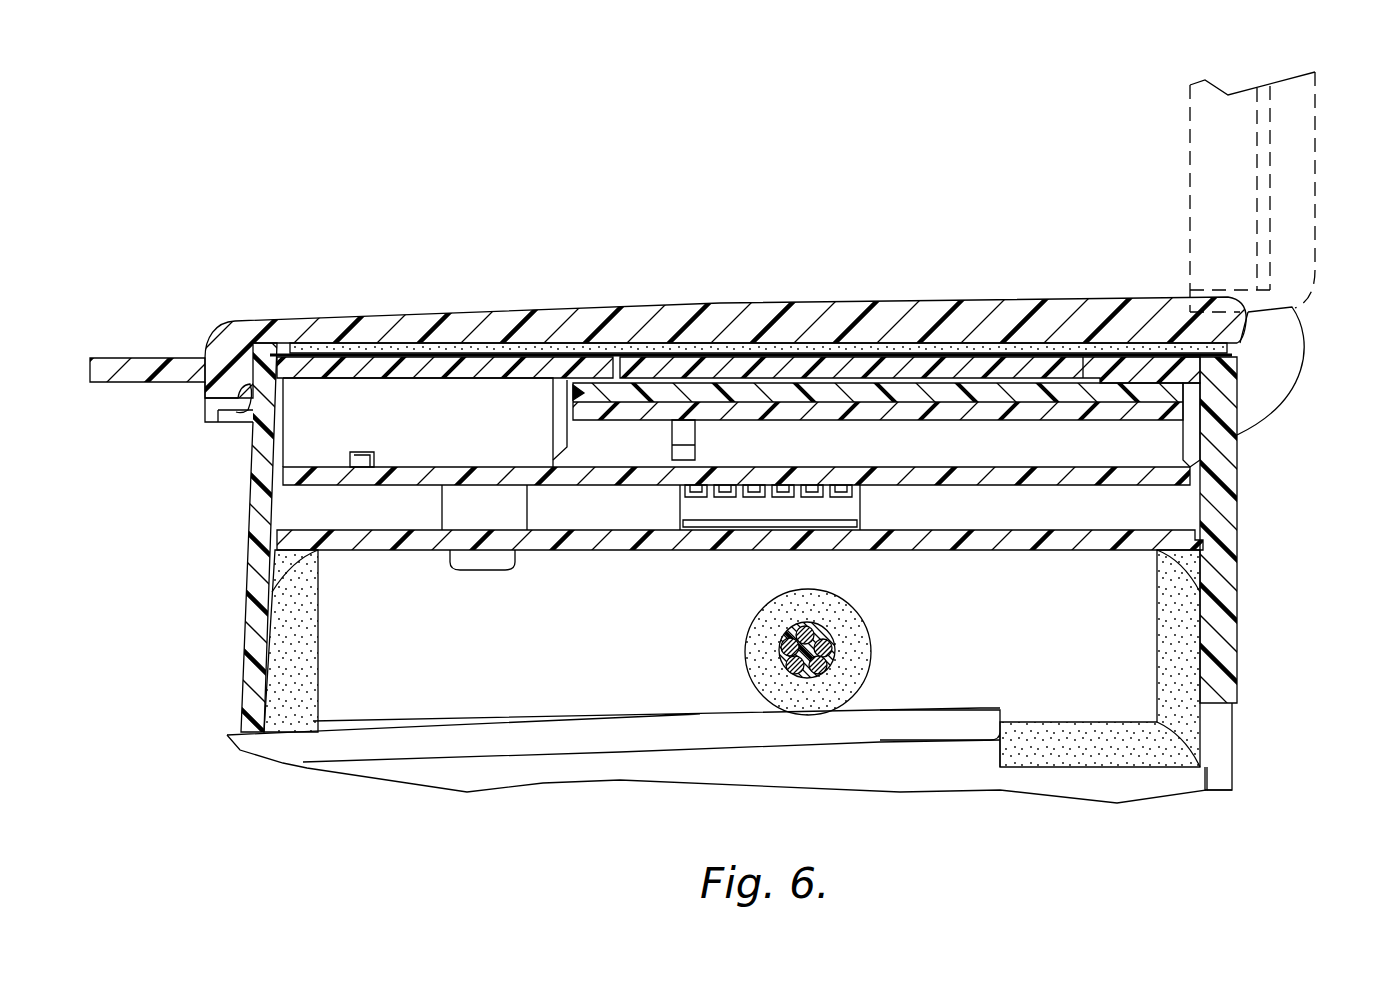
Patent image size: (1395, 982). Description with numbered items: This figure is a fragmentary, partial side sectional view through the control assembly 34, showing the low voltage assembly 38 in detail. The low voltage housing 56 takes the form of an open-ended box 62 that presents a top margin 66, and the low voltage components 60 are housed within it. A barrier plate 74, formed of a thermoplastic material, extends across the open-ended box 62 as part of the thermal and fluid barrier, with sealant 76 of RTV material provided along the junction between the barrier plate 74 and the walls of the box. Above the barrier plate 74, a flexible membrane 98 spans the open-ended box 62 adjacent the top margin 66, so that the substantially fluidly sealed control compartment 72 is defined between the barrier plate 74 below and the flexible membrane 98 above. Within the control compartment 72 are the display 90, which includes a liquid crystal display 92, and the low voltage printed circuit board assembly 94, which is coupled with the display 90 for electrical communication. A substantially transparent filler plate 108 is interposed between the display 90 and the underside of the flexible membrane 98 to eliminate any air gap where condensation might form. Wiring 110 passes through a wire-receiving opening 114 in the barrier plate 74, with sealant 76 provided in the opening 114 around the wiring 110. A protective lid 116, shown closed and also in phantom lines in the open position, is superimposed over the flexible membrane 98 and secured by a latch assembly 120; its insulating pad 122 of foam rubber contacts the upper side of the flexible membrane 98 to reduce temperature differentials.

The control assembly 34 is at (644, 361).
The low voltage assembly 38 is at (1005, 217).
The low voltage housing 56 is at (258, 556).
The low voltage components 60 is at (880, 498).
The open-ended box 62 is at (1225, 545).
The top margin 66 is at (1252, 357).
The control compartment 72 is at (1165, 510).
The barrier plate 74 is at (580, 541).
The sealant 76 is at (310, 628).
The display 90 is at (1048, 430).
The liquid crystal display 92 is at (660, 404).
The low voltage printed circuit board assembly 94 is at (362, 473).
The flexible membrane 98 is at (952, 366).
The filler plate 108 is at (780, 365).
The wiring 110 is at (780, 650).
The wire-receiving opening 114 is at (797, 634).
The protective lid 116 is at (385, 322).
The latch assembly 120 is at (233, 436).
The insulating pad 122 is at (540, 342).